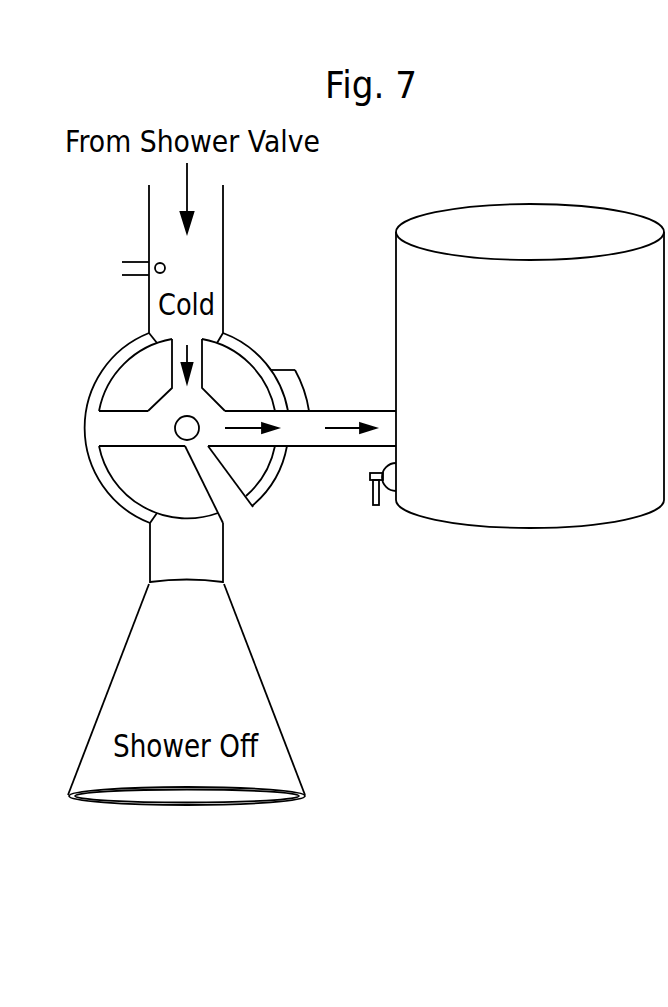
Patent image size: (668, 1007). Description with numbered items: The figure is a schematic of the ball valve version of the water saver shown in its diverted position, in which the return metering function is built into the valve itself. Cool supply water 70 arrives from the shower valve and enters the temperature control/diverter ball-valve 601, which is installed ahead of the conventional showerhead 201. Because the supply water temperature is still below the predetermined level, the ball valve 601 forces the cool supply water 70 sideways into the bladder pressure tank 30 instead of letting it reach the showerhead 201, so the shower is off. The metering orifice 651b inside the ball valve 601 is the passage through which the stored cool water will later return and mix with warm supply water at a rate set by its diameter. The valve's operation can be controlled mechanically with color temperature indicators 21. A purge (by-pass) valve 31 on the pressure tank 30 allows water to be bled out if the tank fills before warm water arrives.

The color temperature indicators 21 is at (156, 265).
The cool supply water 70 is at (205, 245).
The temperature control/diverter ball-valve 601 is at (248, 342).
The metering orifice 651b is at (220, 492).
The bladder pressure tank 30 is at (396, 280).
The purge (by-pass) valve 31 is at (369, 477).
The showerhead 201 is at (260, 673).